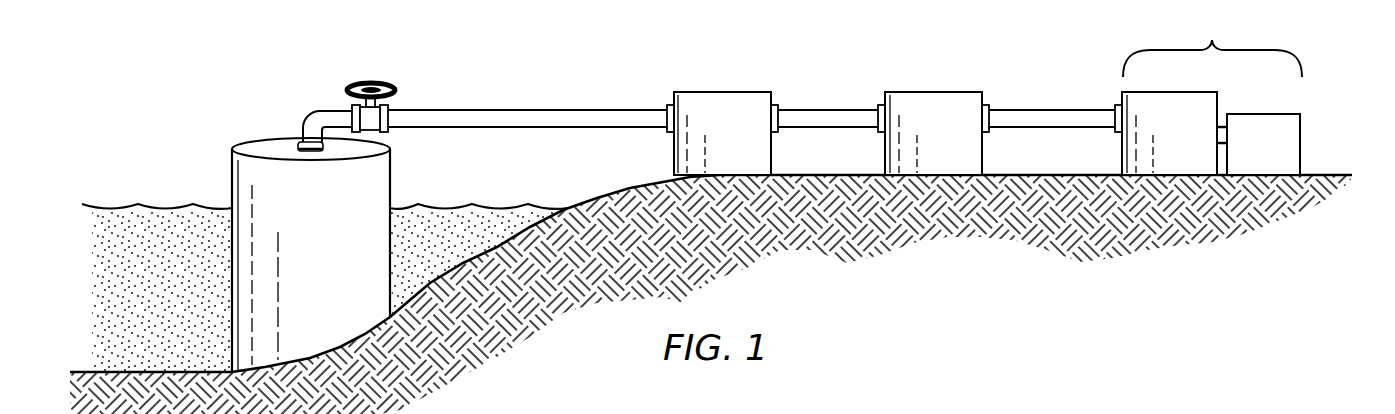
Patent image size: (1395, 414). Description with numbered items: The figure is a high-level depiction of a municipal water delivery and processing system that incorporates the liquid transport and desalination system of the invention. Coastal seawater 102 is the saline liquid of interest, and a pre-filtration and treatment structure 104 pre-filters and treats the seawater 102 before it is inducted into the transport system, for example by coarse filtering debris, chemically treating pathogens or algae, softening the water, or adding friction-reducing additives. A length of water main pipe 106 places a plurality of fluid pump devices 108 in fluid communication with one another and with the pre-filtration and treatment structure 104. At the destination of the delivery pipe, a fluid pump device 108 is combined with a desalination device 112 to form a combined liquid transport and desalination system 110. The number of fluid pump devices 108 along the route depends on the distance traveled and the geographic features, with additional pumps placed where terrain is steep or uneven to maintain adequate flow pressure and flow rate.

The seawater 102 is at (188, 221).
The pre-filtration and treatment structure 104 is at (328, 223).
The water main pipe 106 is at (480, 111).
The fluid pump device 108 is at (738, 128).
The combined liquid transport and desalination system 110 is at (1212, 46).
The desalination device 112 is at (1281, 143).